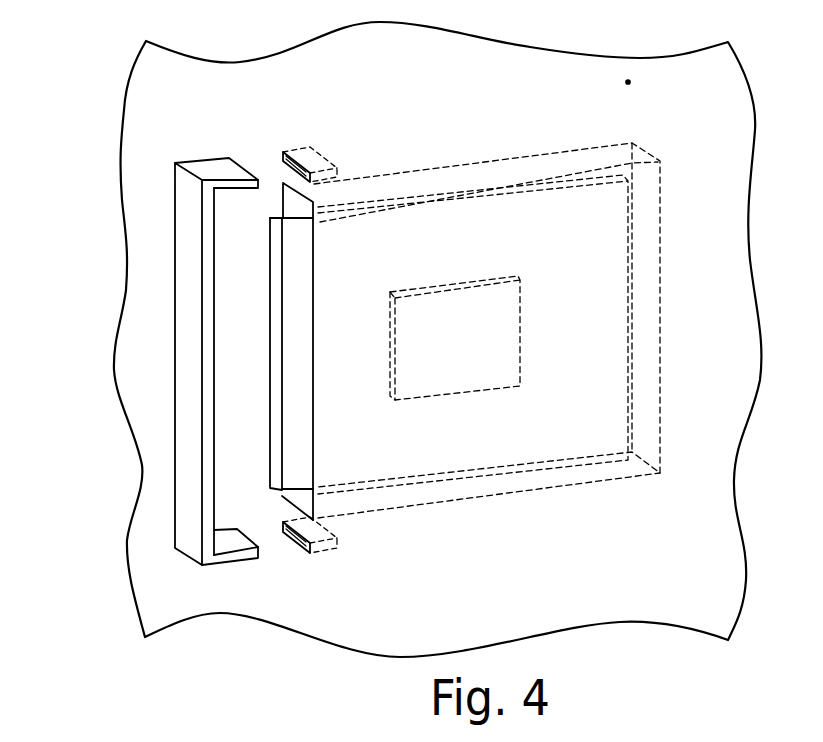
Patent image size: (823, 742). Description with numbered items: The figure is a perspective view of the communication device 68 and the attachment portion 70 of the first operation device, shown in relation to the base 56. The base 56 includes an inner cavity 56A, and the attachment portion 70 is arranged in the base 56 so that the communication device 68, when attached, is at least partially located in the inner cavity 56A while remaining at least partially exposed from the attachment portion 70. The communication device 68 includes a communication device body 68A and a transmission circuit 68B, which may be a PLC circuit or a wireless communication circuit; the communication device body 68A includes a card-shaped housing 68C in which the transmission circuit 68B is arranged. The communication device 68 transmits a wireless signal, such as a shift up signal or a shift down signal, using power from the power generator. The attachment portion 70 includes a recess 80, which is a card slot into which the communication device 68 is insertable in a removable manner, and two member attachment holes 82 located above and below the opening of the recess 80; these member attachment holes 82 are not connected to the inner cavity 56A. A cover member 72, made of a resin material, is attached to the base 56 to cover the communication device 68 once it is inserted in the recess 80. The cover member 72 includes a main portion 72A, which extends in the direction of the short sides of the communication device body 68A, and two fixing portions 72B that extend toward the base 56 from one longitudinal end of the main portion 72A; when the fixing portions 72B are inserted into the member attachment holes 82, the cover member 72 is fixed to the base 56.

The base 56 is at (517, 67).
The inner cavity 56A is at (628, 79).
The communication device 68 is at (266, 316).
The communication device body 68A is at (383, 199).
The transmission circuit 68B is at (475, 277).
The housing 68C is at (473, 193).
The attachment portion 70 is at (333, 105).
The cover member 72 is at (155, 372).
The main portion 72A is at (192, 349).
The fixing portions 72B is at (217, 163).
The recess 80 is at (283, 198).
The member attachment holes 82 is at (292, 150).